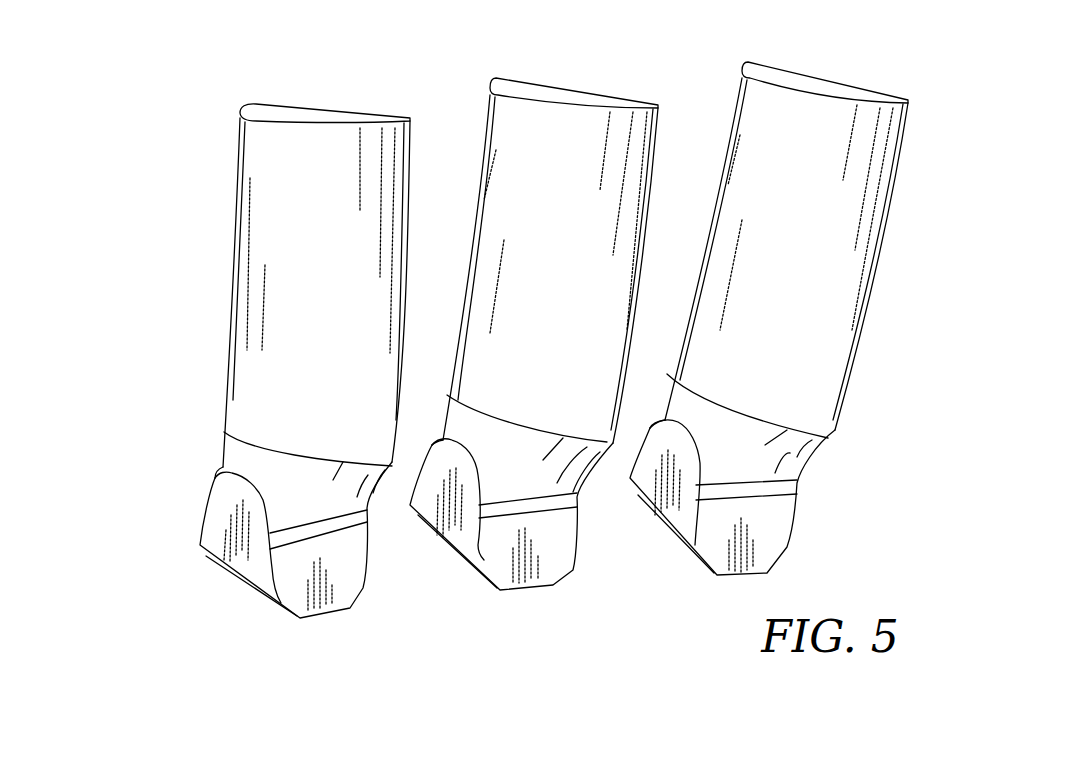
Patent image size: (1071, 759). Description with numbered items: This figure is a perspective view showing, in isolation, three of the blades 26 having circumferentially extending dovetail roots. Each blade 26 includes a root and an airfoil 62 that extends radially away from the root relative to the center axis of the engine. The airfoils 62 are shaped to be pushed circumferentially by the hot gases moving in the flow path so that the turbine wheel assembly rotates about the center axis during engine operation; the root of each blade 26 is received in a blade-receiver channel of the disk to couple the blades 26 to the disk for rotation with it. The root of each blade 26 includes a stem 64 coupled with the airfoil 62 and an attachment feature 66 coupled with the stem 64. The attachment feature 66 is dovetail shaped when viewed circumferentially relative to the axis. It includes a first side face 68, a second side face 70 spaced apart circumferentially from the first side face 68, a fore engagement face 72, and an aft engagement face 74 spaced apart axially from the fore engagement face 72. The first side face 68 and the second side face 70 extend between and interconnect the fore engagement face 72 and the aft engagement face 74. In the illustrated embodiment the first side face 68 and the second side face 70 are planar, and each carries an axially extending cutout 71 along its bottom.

The blade 26 is at (334, 111).
The airfoil 62 is at (232, 277).
The stem 64 is at (840, 431).
The attachment feature 66 is at (158, 587).
The first side face 68 is at (220, 513).
The second side face 70 is at (370, 547).
The axially extending cutout 71 is at (235, 572).
The fore engagement face 72 is at (212, 480).
The aft engagement face 74 is at (352, 585).